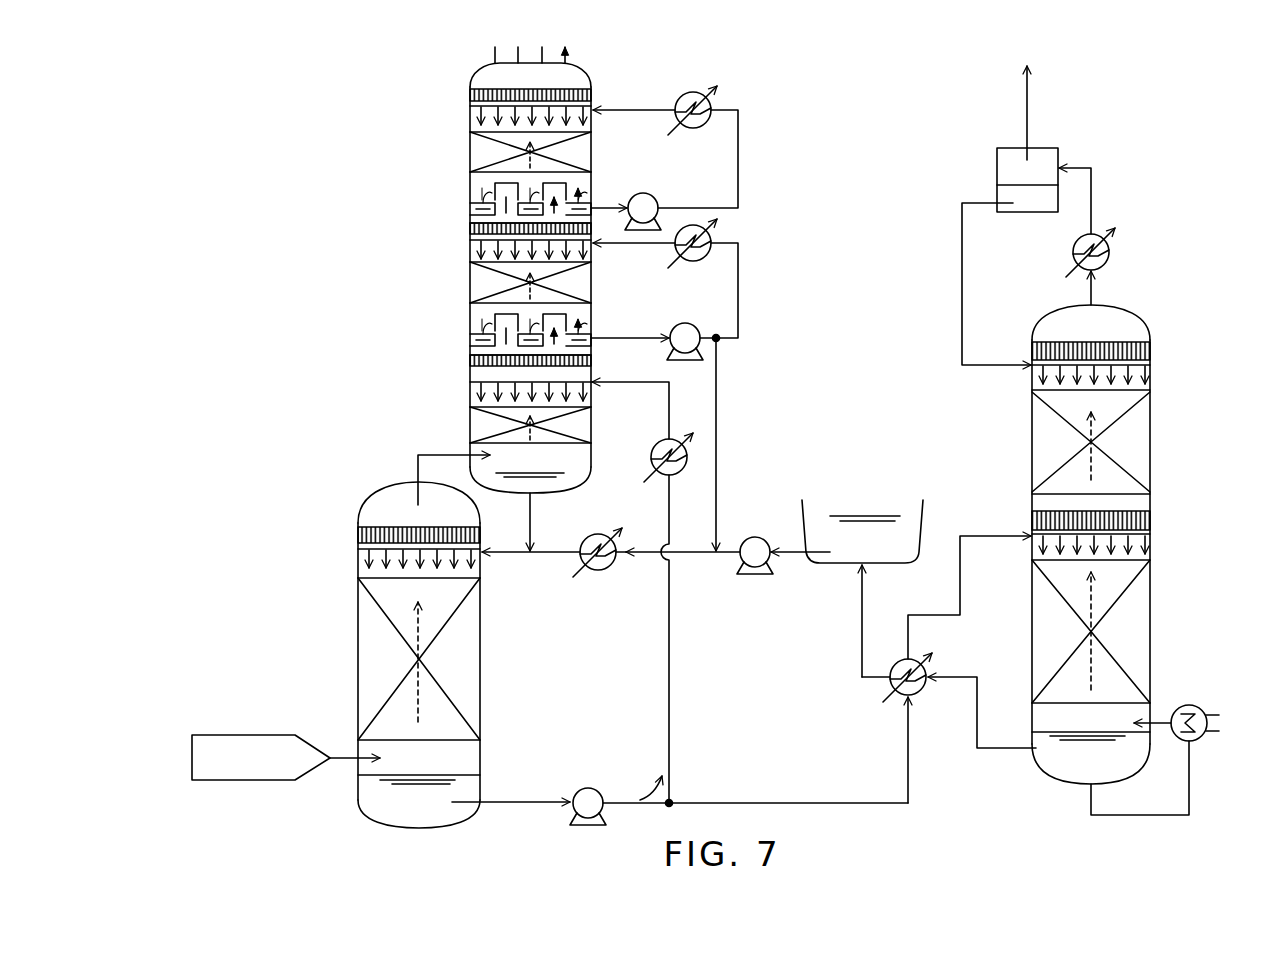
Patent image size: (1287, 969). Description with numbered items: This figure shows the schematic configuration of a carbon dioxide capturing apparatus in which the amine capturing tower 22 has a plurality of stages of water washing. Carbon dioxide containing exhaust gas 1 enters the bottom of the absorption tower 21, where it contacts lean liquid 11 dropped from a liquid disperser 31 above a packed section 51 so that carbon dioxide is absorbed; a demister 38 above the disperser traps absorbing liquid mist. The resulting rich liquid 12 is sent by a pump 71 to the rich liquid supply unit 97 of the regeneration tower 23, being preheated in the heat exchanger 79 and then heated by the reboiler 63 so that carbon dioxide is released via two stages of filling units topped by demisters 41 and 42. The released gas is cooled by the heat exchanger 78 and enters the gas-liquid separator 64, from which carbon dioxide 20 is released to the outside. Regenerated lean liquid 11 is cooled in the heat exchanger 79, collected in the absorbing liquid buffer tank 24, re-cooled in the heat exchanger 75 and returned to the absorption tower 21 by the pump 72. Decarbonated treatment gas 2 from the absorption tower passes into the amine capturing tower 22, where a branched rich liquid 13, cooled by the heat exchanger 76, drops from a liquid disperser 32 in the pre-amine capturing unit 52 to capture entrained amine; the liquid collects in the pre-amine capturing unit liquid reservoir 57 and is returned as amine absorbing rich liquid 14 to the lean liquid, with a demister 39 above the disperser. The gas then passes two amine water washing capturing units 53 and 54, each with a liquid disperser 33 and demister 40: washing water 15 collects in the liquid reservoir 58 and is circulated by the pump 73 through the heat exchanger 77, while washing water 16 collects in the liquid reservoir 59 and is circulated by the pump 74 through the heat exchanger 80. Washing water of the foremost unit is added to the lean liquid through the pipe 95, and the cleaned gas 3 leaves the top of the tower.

The carbon dioxide containing exhaust gas 1 is at (250, 735).
The decarbonated treatment gas 2 is at (418, 455).
The exhaust gas 3 is at (494, 54).
The lean liquid 11 is at (510, 556).
The rich liquid 12 is at (530, 802).
The branched rich liquid 13 is at (668, 655).
The amine absorbing rich liquid 14 is at (530, 515).
The washing water 15 is at (738, 263).
The washing water 16 is at (738, 163).
The recovered gas 20 is at (1027, 93).
The absorption tower 21 is at (346, 588).
The amine capturing tower 22 is at (450, 130).
The regeneration tower 23 is at (1162, 423).
The absorbing liquid buffer tank 24 is at (830, 565).
The liquid disperser 31 is at (358, 556).
The liquid disperser 32 is at (472, 390).
The liquid disperser 33 is at (472, 118).
The demister 38 is at (358, 532).
The demister 39 is at (470, 360).
The demister 40 is at (470, 95).
The demister 41 is at (1030, 520).
The demister 42 is at (1152, 350).
The packing 51 is at (358, 658).
The pre-amine capturing unit 52 is at (472, 425).
The amine water washing capturing unit 53 is at (480, 287).
The amine water washing capturing unit 54 is at (480, 150).
The pre-amine capturing unit liquid reservoir 57 is at (575, 478).
The liquid reservoir 58 is at (470, 340).
The liquid reservoir 59 is at (470, 208).
The reboiler 63 is at (1204, 738).
The gas-liquid separator 64 is at (985, 172).
The pump 71 is at (591, 788).
The pump 72 is at (752, 575).
The pump 73 is at (670, 357).
The pump 74 is at (650, 194).
The heat exchanger 75 is at (614, 566).
The heat exchanger 76 is at (655, 446).
The heat exchanger 77 is at (695, 262).
The heat exchanger 78 is at (1108, 262).
The heat exchanger 79 is at (925, 690).
The heat exchanger 80 is at (682, 95).
The pipe 95 is at (716, 418).
The rich liquid supply unit 97 is at (1152, 545).